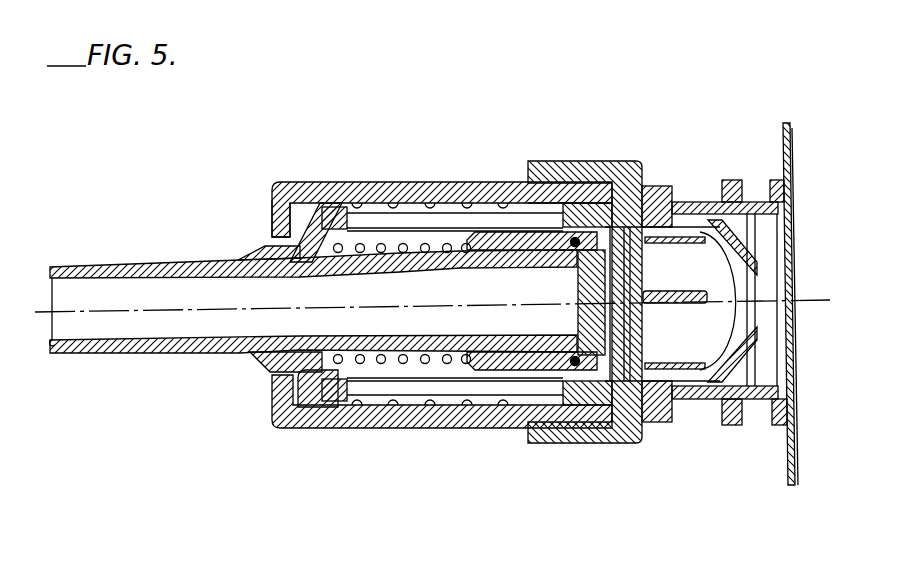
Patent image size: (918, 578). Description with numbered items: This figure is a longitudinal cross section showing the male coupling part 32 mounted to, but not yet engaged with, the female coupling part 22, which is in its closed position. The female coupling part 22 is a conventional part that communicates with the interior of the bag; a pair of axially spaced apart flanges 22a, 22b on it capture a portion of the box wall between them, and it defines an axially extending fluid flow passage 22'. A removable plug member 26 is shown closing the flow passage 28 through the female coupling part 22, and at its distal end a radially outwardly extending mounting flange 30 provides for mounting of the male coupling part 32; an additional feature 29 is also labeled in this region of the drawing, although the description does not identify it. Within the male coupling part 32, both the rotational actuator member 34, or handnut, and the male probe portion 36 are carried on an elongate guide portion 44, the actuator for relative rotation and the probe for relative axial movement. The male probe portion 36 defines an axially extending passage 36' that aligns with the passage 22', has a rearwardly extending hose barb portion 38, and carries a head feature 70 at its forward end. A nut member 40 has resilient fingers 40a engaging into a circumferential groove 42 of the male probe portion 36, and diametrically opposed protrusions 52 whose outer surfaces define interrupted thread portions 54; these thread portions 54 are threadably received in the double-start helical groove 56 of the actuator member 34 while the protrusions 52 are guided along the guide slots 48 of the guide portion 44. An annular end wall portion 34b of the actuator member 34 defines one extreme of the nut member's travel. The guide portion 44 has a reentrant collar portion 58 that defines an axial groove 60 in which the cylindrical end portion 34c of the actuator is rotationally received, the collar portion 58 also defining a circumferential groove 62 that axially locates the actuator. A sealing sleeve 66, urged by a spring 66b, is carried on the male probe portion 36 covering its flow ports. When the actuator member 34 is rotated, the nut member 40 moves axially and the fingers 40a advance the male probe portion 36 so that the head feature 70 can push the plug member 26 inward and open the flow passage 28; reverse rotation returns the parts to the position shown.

The female coupling part 22 is at (751, 282).
The flange 22a is at (777, 185).
The flange 22b is at (729, 427).
The fluid flow passage 22' is at (791, 293).
The plug member 26 is at (777, 216).
The flow passage 28 is at (757, 371).
The panel 29 is at (777, 282).
The mounting flange 30 is at (656, 186).
The male coupling part 32 is at (428, 118).
The actuator member 34 is at (396, 430).
The annular end wall portion 34b is at (260, 184).
The cylindrical end portion 34c is at (575, 162).
The male probe portion 36 is at (402, 249).
The axially extending passage 36' is at (46, 376).
The hose barb portion 38 is at (128, 262).
The nut member 40 is at (455, 246).
The resilient fingers 40a is at (248, 252).
The circumferential groove 42 is at (243, 366).
The guide portion 44 is at (343, 430).
The guide slots 48 is at (371, 430).
The protrusions 52 is at (312, 185).
The thread portion 54 is at (330, 185).
The helical groove 56 is at (455, 430).
The collar portion 58 is at (600, 161).
The groove 60 is at (518, 444).
The groove 62 is at (573, 445).
The sealing sleeve 66 is at (496, 430).
The spring 66b is at (462, 232).
The head feature 70 is at (628, 446).